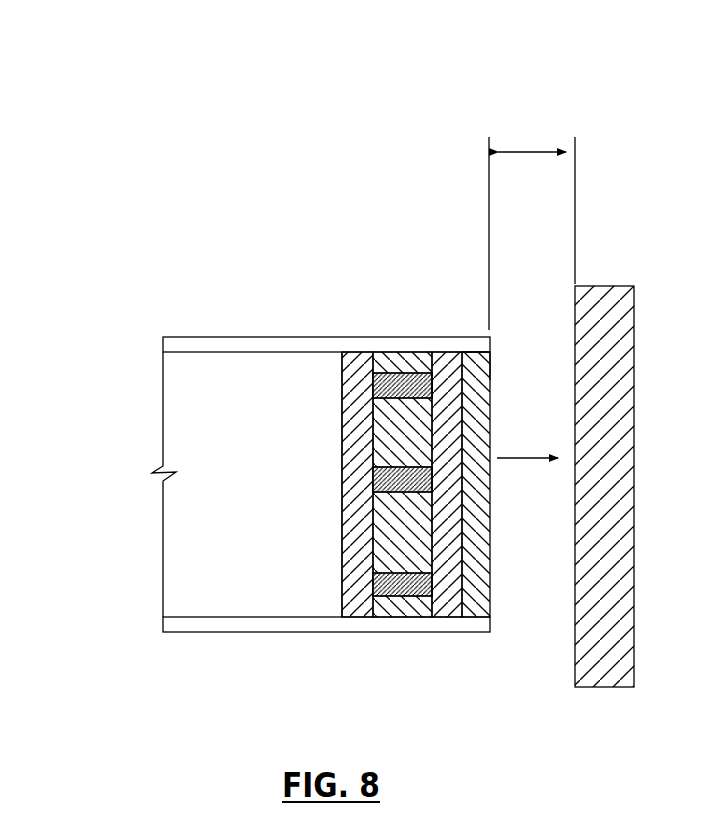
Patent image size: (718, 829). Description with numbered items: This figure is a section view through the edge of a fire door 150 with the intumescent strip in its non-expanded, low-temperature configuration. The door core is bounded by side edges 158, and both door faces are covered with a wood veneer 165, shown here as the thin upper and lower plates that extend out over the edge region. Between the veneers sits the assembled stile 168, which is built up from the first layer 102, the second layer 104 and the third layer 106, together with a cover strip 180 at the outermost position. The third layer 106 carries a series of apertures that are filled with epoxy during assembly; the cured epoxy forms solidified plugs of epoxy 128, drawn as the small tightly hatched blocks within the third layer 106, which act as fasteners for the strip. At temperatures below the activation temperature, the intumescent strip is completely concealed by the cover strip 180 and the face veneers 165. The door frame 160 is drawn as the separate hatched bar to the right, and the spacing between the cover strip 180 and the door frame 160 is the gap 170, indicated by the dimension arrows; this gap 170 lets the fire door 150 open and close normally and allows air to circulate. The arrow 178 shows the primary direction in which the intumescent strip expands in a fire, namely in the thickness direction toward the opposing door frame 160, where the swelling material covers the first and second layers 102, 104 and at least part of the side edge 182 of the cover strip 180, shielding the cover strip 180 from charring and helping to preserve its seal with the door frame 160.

The fire door 150 is at (326, 262).
The side edges 158 is at (258, 337).
The wood veneer 165 is at (443, 352).
The stile 168 is at (397, 322).
The first layer 102 is at (355, 610).
The third layer 106 is at (400, 605).
The plug of epoxy 128 is at (373, 386).
The second layer 104 is at (445, 608).
The cover strip 180 is at (482, 604).
The side edge 182 is at (468, 355).
The gap 170 is at (531, 150).
The arrow 178 is at (523, 460).
The door frame 160 is at (612, 292).